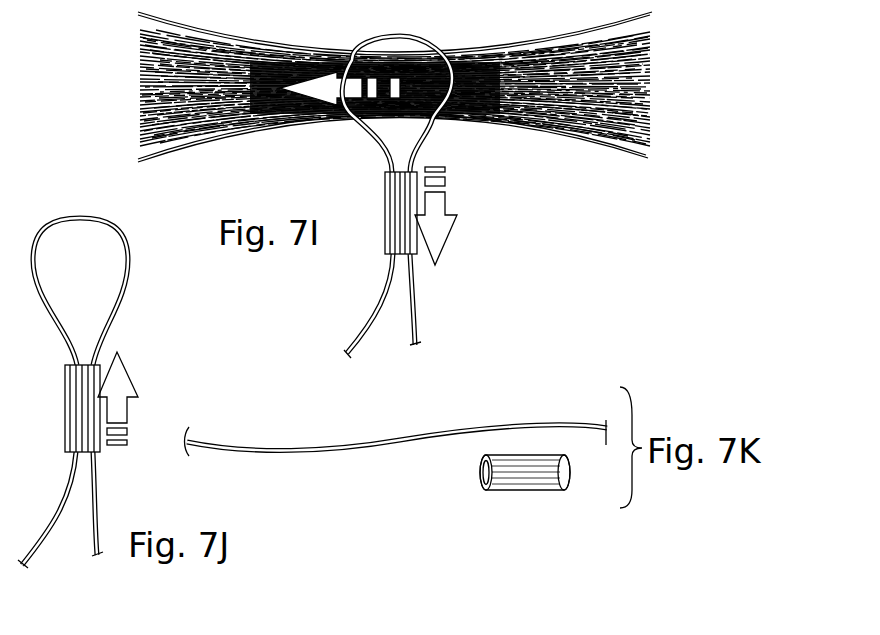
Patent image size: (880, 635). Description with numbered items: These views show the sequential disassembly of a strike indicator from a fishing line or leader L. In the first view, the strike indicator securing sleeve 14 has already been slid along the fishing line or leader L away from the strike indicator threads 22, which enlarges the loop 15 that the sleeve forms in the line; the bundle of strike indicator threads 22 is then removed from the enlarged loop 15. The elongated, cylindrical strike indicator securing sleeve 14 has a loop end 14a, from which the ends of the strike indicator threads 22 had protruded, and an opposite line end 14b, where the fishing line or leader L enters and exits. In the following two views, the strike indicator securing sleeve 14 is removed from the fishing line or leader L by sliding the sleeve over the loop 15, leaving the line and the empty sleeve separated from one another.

In FIG. 7I, the strike indicator securing sleeve 14 is at (385, 243).
In FIG. 7J, the strike indicator securing sleeve 14 is at (65, 430).
In FIG. 7K, the strike indicator securing sleeve 14 is at (525, 486).
In FIG. 7I, the loop end 14a is at (408, 172).
In FIG. 7J, the loop end 14a is at (95, 365).
In FIG. 7I, the line end 14b is at (416, 255).
In FIG. 7J, the line end 14b is at (97, 452).
In FIG. 7I, the loop 15 is at (390, 36).
In FIG. 7J, the loop 15 is at (125, 258).
In FIG. 7I, the strike indicator threads 22 is at (536, 122).
In FIG. 7I, the fishing line or leader L is at (415, 328).
In FIG. 7J, the fishing line or leader L is at (95, 493).
In FIG. 7K, the fishing line or leader L is at (372, 441).